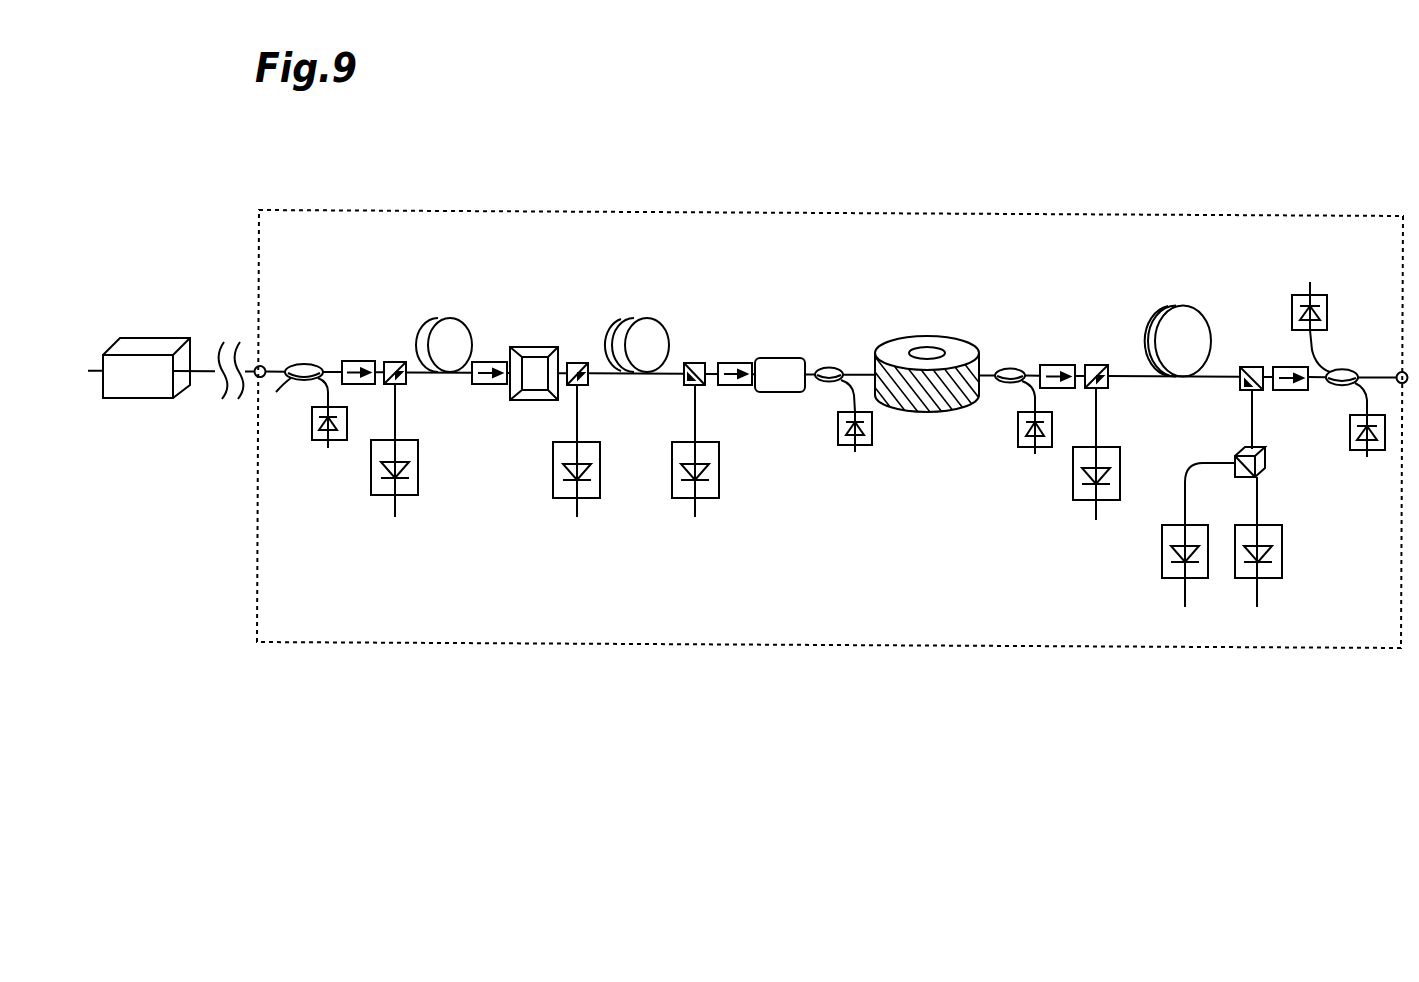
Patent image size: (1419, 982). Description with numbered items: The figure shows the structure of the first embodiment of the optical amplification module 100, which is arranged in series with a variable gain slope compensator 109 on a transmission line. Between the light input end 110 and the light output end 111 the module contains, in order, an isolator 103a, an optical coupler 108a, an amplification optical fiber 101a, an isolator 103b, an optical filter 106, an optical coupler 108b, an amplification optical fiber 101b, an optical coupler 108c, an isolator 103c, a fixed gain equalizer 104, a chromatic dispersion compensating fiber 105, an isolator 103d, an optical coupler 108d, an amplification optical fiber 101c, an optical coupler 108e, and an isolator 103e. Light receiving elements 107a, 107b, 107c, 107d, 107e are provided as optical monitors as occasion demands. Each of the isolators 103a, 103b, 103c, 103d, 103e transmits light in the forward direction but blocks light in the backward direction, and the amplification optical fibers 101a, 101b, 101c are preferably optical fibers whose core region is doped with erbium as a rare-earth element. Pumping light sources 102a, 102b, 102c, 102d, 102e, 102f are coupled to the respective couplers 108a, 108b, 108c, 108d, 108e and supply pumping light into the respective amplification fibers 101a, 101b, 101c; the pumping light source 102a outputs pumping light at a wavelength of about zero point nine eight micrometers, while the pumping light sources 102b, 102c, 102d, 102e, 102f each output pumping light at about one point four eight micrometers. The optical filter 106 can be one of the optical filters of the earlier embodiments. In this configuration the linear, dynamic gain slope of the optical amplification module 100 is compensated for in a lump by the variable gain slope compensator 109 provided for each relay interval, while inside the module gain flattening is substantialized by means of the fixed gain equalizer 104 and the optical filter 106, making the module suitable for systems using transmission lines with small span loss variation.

The optical amplification module 100 is at (820, 215).
The amplification optical fiber 101a is at (452, 315).
The amplification optical fiber 101b is at (652, 315).
The amplification optical fiber 101c is at (1185, 305).
The pumping light source 102a is at (410, 497).
The pumping light source 102b is at (585, 500).
The pumping light source 102c is at (705, 500).
The pumping light source 102d is at (1077, 503).
The pumping light source 102e is at (1167, 580).
The pumping light source 102f is at (1267, 580).
The isolator 103a is at (358, 360).
The isolator 103b is at (500, 362).
The isolator 103c is at (737, 363).
The isolator 103d is at (1062, 365).
The isolator 103e is at (1285, 392).
The fixed gain equalizer 104 is at (783, 392).
The chromatic dispersion compensating fiber 105 is at (938, 337).
The optical filter 106 is at (515, 402).
The light receiving element 107a is at (318, 440).
The light receiving element 107b is at (862, 445).
The light receiving element 107c is at (1030, 447).
The light receiving element 107d is at (1302, 292).
The light receiving element 107e is at (1353, 450).
The optical coupler 108a is at (402, 387).
The optical coupler 108b is at (587, 387).
The optical coupler 108c is at (702, 387).
The optical coupler 108d is at (1107, 388).
The optical coupler 108e is at (1243, 393).
The variable gain slope compensator 109 is at (135, 400).
The light input end 110 is at (264, 366).
The light output end 111 is at (1397, 371).